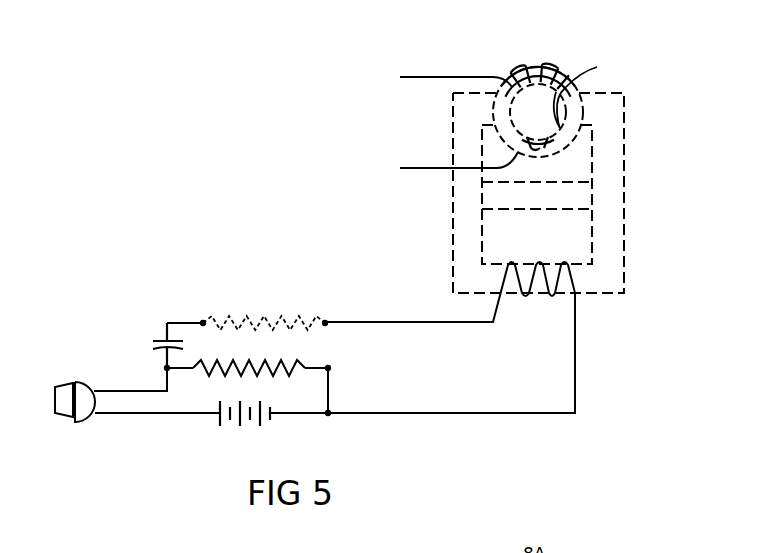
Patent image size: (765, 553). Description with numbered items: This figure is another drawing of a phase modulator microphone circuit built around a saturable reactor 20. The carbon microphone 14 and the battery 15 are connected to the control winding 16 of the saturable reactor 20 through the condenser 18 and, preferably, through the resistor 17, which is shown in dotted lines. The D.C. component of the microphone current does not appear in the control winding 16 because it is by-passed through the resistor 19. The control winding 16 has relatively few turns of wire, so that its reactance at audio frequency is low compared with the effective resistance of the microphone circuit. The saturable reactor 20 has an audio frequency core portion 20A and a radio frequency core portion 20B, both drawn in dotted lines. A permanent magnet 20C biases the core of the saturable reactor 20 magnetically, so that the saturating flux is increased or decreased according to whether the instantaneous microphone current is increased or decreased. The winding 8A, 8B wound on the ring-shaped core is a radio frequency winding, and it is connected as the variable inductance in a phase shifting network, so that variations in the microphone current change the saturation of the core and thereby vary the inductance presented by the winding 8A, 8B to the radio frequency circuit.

The carbon microphone 14 is at (90, 417).
The battery 15 is at (268, 424).
The control winding 16 is at (541, 294).
The resistor 17 is at (291, 317).
The condenser 18 is at (152, 350).
The resistor 19 is at (258, 367).
The saturable reactor 20 is at (549, 118).
The radio frequency winding 8A is at (524, 67).
The radio frequency winding 8B is at (550, 138).
The audio frequency core portion 20A is at (625, 158).
The radio frequency core portion 20B is at (592, 87).
The permanent magnet 20C is at (510, 201).